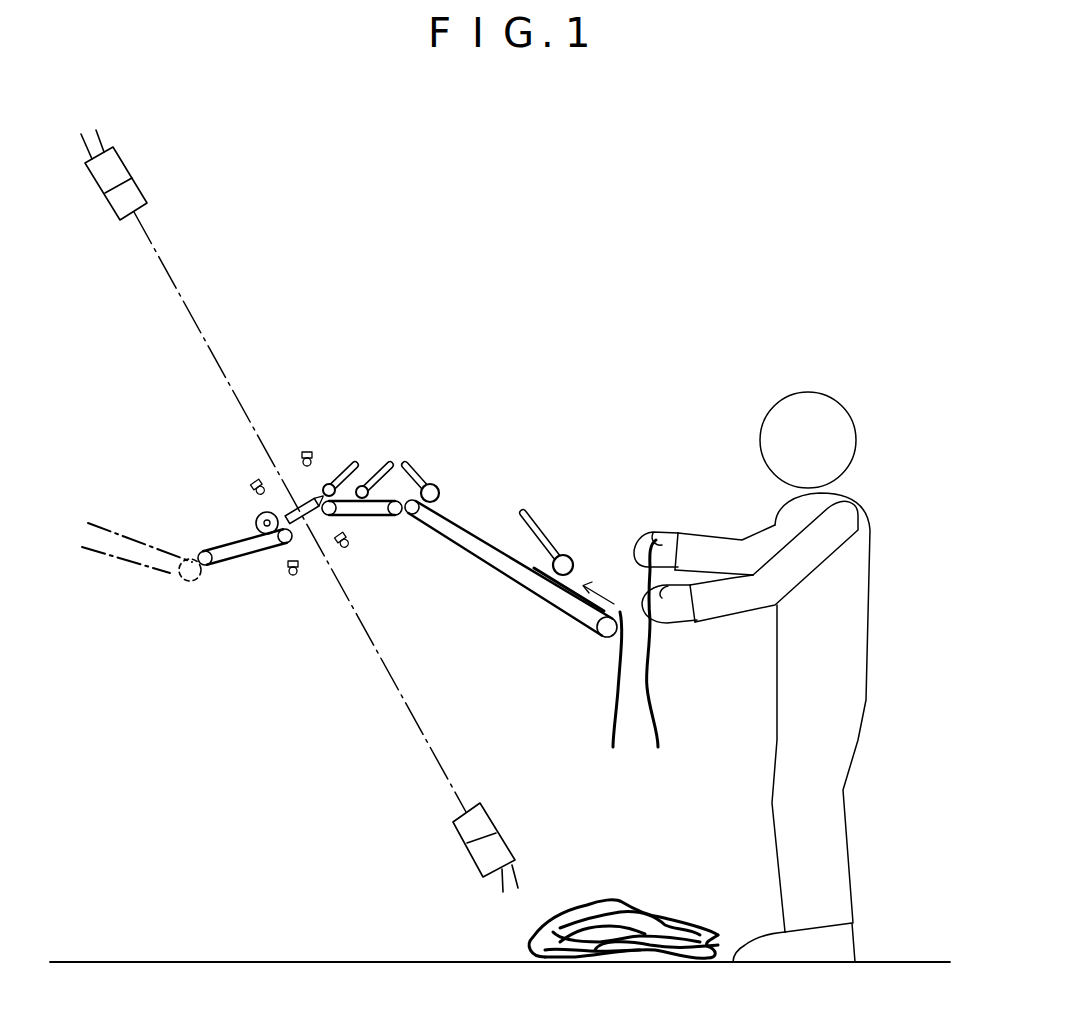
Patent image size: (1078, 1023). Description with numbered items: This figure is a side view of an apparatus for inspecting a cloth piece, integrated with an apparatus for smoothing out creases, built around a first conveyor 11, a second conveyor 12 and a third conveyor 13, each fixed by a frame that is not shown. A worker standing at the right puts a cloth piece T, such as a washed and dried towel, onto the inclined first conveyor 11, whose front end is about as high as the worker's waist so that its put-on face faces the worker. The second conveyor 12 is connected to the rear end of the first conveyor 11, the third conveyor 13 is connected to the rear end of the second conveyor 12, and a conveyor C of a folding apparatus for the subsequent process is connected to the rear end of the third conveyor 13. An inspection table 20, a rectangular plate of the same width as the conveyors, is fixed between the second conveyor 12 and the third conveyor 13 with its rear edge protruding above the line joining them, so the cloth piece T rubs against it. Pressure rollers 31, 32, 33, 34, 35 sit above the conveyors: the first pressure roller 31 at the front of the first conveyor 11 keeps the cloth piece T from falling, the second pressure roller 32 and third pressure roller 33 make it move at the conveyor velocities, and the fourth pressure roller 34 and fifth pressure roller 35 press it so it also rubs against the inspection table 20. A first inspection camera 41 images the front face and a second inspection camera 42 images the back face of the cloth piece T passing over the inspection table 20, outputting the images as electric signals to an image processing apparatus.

The first conveyor 11 is at (472, 560).
The second conveyor 12 is at (372, 520).
The third conveyor 13 is at (248, 562).
The inspection table 20 is at (317, 560).
The first pressure roller 31 is at (577, 558).
The second pressure roller 32 is at (453, 484).
The third pressure roller 33 is at (362, 484).
The fourth pressure roller 34 is at (322, 487).
The fifth pressure roller 35 is at (256, 514).
The first inspection camera 41 is at (138, 189).
The second inspection camera 42 is at (478, 868).
The conveyor of a folding apparatus C is at (147, 568).
The cloth piece T is at (605, 720).